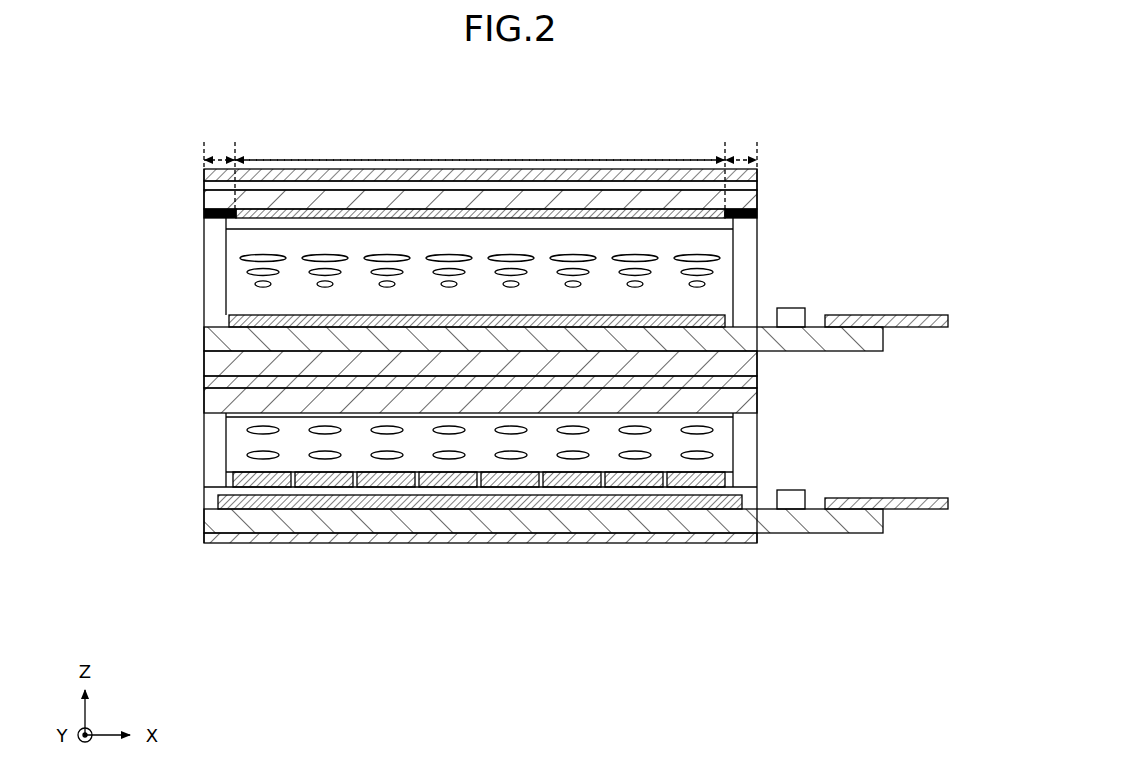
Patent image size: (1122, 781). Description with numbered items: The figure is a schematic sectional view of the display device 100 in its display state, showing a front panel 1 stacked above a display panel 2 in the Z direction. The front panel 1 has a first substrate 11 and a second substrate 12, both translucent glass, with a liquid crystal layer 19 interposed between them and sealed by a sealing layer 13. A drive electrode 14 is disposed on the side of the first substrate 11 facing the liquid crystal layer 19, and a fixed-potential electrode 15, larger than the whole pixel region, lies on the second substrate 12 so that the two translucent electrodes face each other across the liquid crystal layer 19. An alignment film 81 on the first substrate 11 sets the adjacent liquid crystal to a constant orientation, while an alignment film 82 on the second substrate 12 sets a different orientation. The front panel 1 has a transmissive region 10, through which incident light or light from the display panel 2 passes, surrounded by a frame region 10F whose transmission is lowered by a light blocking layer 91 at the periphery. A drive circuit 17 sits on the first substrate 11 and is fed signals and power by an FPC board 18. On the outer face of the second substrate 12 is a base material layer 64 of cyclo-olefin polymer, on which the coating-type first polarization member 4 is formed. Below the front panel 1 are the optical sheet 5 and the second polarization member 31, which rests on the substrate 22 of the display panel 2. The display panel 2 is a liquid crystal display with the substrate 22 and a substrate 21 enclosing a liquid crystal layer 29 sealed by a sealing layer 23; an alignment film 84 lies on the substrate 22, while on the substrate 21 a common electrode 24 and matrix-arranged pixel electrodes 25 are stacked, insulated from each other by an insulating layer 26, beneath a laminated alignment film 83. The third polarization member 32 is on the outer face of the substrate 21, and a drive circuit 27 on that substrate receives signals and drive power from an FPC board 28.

The display device 100 is at (313, 105).
The front panel 1 is at (840, 156).
The display panel 2 is at (840, 414).
The transmissive region 10 is at (432, 160).
The frame region 10F is at (218, 152).
The first polarization member 4 is at (340, 178).
The base material layer 64 is at (590, 188).
The second substrate 12 is at (212, 202).
The light blocking layer 91 is at (215, 207).
The fixed-potential electrode 15 is at (258, 227).
The sealing layer 13 is at (745, 237).
The alignment film 82 is at (236, 249).
The liquid crystal layer 19 is at (236, 270).
The alignment film 81 is at (240, 294).
The drive electrode 14 is at (240, 320).
The first substrate 11 is at (215, 338).
The drive circuit 17 is at (808, 320).
The FPC board 18 is at (920, 318).
The optical sheet 5 is at (214, 358).
The second polarization member 31 is at (212, 382).
The substrate 22 is at (212, 402).
The sealing layer 23 is at (748, 440).
The liquid crystal layer 29 is at (240, 437).
The alignment film 84 is at (734, 418).
The pixel electrodes 25 is at (236, 480).
The alignment film 83 is at (720, 474).
The insulating layer 26 is at (222, 501).
The common electrode 24 is at (233, 511).
The substrate 21 is at (230, 527).
The third polarization member 32 is at (268, 538).
The drive circuit 27 is at (808, 496).
The FPC board 28 is at (920, 500).